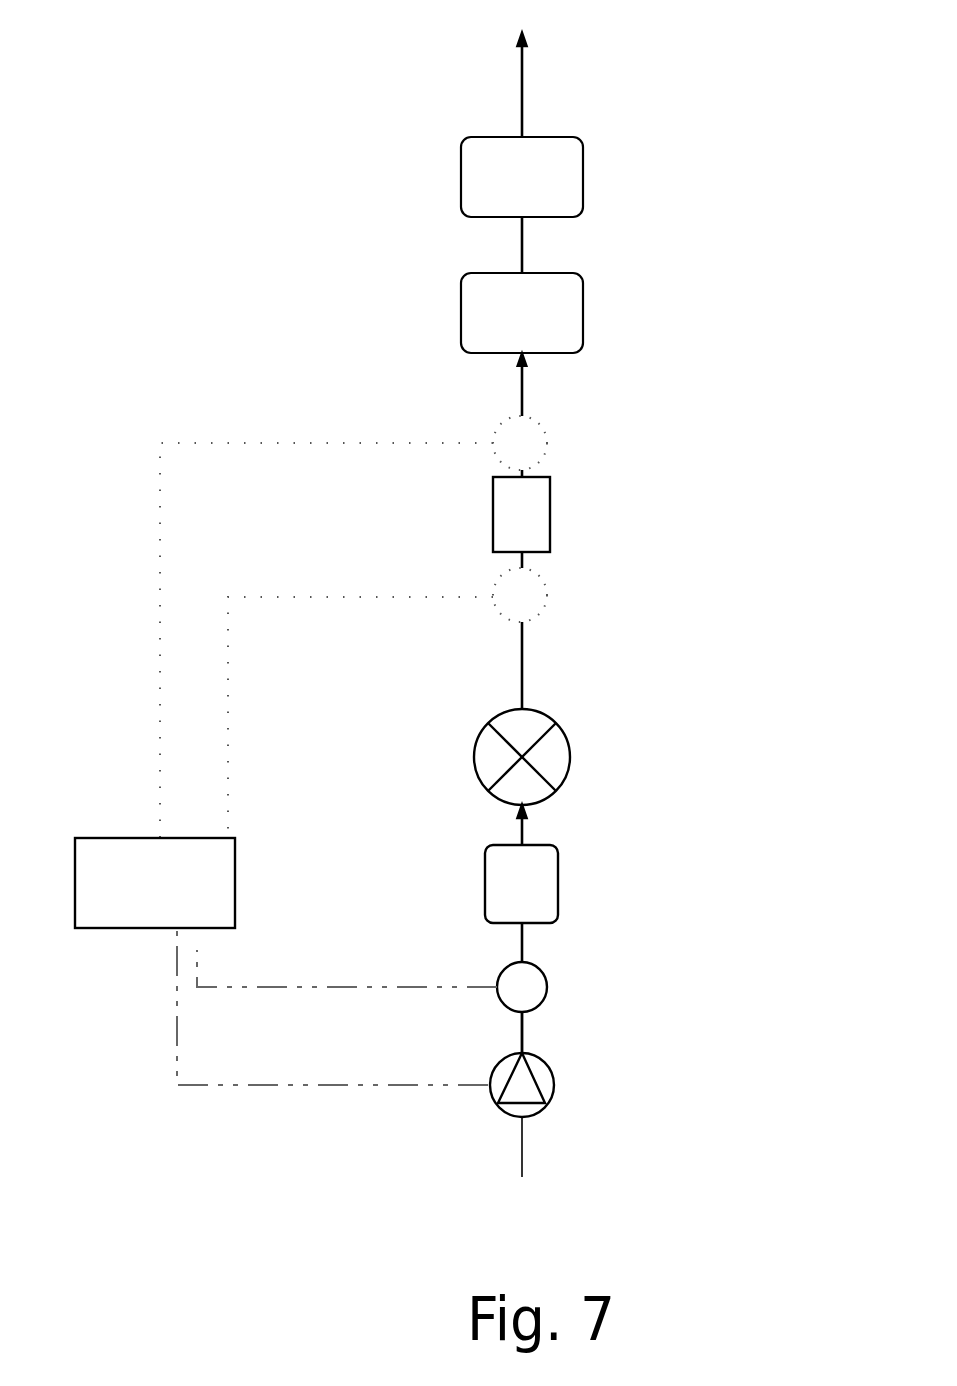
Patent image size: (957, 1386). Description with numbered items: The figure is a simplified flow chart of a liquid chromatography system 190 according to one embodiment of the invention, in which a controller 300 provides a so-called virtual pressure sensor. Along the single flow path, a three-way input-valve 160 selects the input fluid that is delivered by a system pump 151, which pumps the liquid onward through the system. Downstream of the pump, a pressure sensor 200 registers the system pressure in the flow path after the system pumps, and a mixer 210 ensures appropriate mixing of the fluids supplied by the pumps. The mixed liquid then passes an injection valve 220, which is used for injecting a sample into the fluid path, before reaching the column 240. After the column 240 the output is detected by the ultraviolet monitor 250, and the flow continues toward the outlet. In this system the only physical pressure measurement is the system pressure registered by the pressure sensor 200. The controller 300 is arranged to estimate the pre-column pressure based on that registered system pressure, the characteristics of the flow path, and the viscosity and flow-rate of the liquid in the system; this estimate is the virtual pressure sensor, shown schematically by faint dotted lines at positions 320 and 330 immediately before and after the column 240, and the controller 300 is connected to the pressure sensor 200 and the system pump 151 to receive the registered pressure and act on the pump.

The chromatography system 190 is at (137, 214).
The ultraviolet (UV) monitor 250 is at (596, 154).
The pressure sensor downstream of column 330 is at (575, 443).
The column 240 is at (457, 515).
The pressure sensor upstream of column 320 is at (573, 579).
The injection valve 220 is at (666, 754).
The mixer 210 is at (605, 880).
The pressure sensor 200 is at (564, 955).
The system pump 151 is at (657, 1013).
The 3-way input-valve 160 is at (585, 1108).
The controller 300 is at (118, 978).